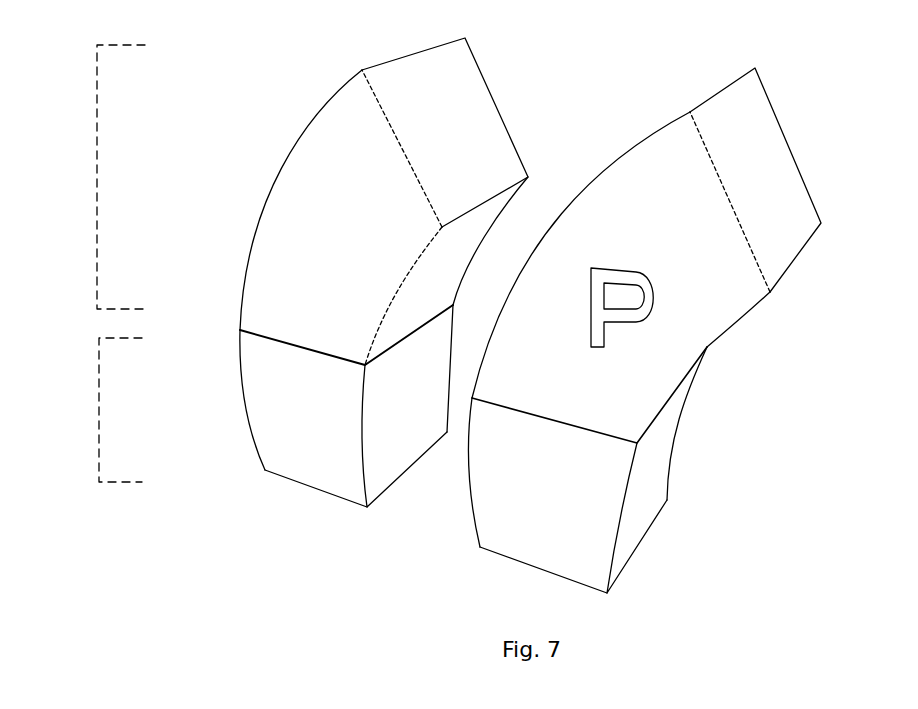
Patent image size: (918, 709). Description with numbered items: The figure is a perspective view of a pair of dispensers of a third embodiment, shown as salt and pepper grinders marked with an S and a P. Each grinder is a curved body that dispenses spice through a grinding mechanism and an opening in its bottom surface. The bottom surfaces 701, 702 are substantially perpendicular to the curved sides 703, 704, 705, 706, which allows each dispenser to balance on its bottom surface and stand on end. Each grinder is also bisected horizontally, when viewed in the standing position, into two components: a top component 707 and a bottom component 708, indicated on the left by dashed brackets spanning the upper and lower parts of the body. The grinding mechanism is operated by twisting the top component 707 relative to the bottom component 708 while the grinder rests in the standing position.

The bottom surface 701 is at (331, 311).
The bottom surface 702 is at (597, 353).
The curved side 703 is at (250, 418).
The curved side 704 is at (388, 443).
The curved side 705 is at (473, 475).
The curved side 706 is at (623, 530).
The top component 707 is at (86, 177).
The bottom component 708 is at (85, 410).